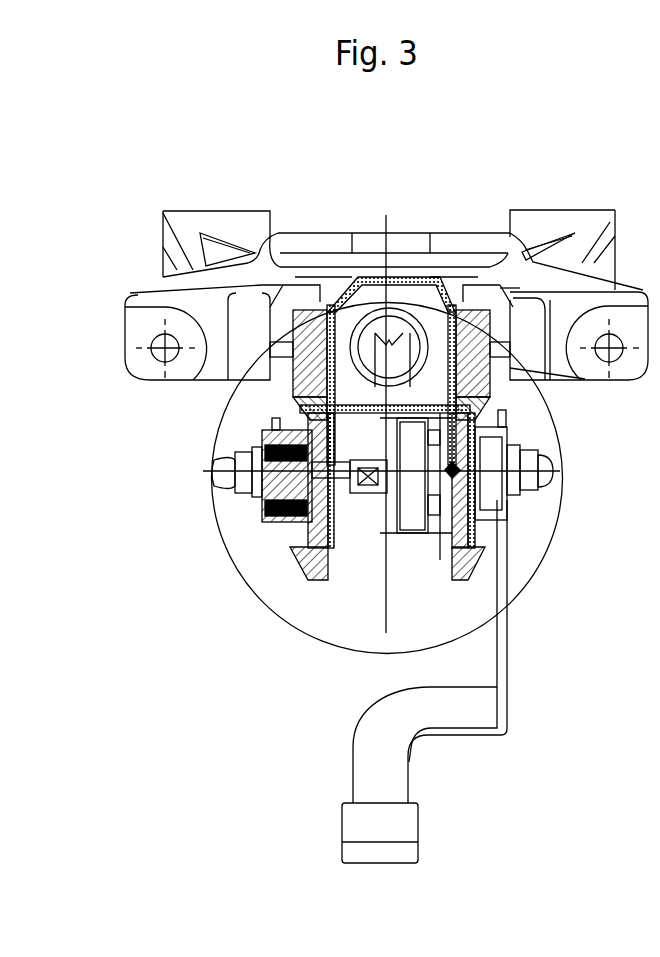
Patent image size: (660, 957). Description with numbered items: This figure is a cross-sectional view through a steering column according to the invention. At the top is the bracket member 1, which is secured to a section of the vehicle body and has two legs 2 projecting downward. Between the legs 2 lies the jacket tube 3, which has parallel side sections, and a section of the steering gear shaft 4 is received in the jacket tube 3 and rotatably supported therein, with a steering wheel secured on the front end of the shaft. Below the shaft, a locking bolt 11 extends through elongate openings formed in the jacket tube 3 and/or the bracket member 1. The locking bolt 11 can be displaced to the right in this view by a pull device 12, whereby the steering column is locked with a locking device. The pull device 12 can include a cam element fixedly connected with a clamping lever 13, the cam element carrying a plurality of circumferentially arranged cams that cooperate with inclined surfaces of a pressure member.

The bracket member 1 is at (177, 397).
The legs 2 is at (307, 560).
The jacket tube 3 is at (215, 440).
The steering gear shaft 4 is at (413, 310).
The locking bolt 11 is at (345, 483).
The pull device 12 is at (515, 418).
The clamping lever 13 is at (457, 713).